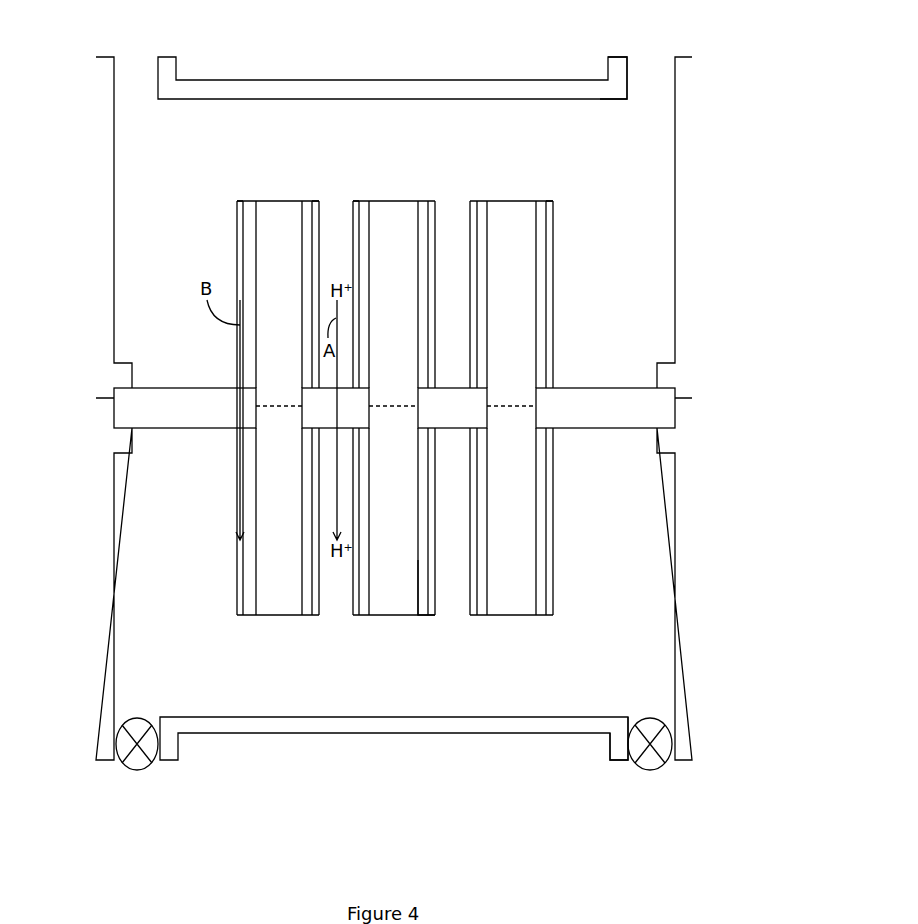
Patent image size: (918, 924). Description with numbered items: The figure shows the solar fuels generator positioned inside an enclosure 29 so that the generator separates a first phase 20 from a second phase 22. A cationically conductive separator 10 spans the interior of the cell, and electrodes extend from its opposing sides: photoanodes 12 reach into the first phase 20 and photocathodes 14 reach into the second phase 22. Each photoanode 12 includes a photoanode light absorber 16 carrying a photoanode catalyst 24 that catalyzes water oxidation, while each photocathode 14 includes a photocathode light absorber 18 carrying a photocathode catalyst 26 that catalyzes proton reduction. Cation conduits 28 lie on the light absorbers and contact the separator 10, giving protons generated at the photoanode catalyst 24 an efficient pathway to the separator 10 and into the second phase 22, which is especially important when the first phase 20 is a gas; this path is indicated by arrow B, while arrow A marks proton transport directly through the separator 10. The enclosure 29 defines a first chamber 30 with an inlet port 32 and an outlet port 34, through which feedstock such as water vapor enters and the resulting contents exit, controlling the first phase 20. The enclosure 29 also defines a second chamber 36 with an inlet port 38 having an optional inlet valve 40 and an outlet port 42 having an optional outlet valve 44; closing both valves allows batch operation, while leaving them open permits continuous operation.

The separator 10 is at (187, 416).
The photoanode 12 is at (218, 196).
The photocathode 14 is at (213, 600).
The photoanode light absorber 16 is at (278, 230).
The photocathode light absorber 18 is at (288, 577).
The first phase 20 is at (607, 297).
The second phase 22 is at (612, 506).
The photoanode catalyst 24 is at (425, 210).
The photocathode catalyst 26 is at (420, 602).
The cation conduit 28 is at (237, 258).
The enclosure 29 is at (409, 408).
The first chamber 30 is at (135, 210).
The inlet port 32 is at (136, 31).
The outlet port 34 is at (639, 37).
The second chamber 36 is at (140, 623).
The inlet port 38 is at (140, 717).
The inlet valve 40 is at (140, 795).
The outlet port 42 is at (651, 788).
The outlet valve 44 is at (655, 717).